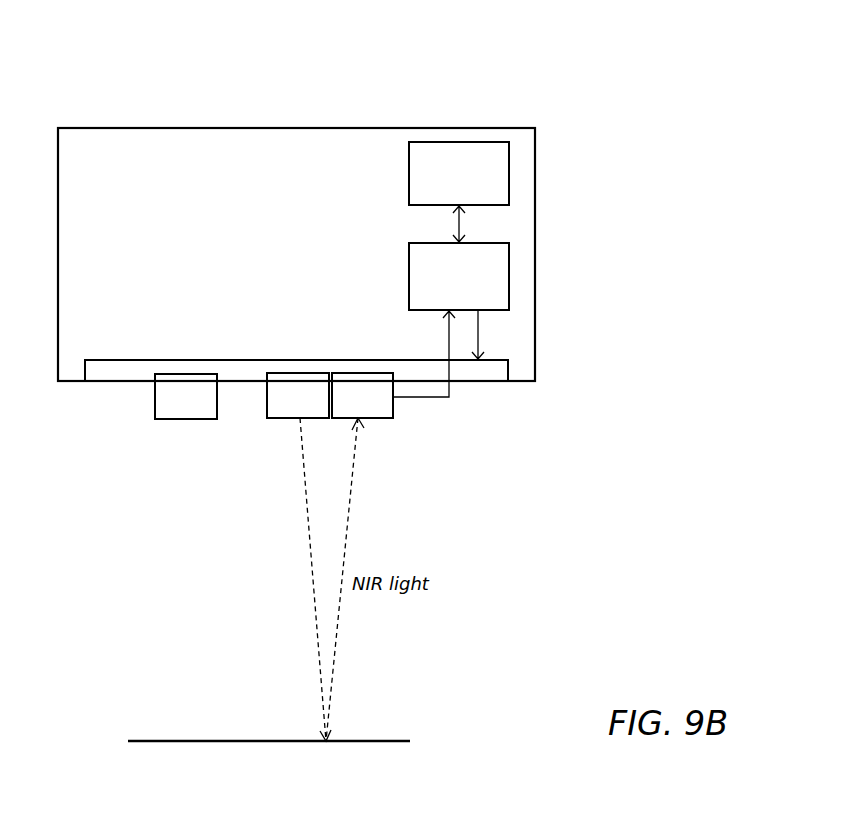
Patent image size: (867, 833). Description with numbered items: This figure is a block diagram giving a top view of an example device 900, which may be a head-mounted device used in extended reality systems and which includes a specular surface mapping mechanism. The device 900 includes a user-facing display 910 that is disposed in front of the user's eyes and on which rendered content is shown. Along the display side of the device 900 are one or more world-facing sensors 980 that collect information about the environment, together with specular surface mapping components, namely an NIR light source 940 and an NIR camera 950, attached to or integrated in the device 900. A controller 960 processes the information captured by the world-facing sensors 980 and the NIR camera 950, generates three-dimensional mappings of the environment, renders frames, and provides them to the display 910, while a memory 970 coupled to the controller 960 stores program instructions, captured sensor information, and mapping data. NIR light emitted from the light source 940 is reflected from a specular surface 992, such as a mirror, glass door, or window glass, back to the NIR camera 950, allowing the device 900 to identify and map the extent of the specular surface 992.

The device 900 is at (80, 105).
The user-facing display 910 is at (508, 372).
The NIR light source 940 is at (299, 557).
The NIR camera 950 is at (359, 557).
The controller 960 is at (459, 276).
The memory 970 is at (459, 173).
The world-facing sensors 980 is at (186, 396).
The specular surface 992 is at (137, 740).